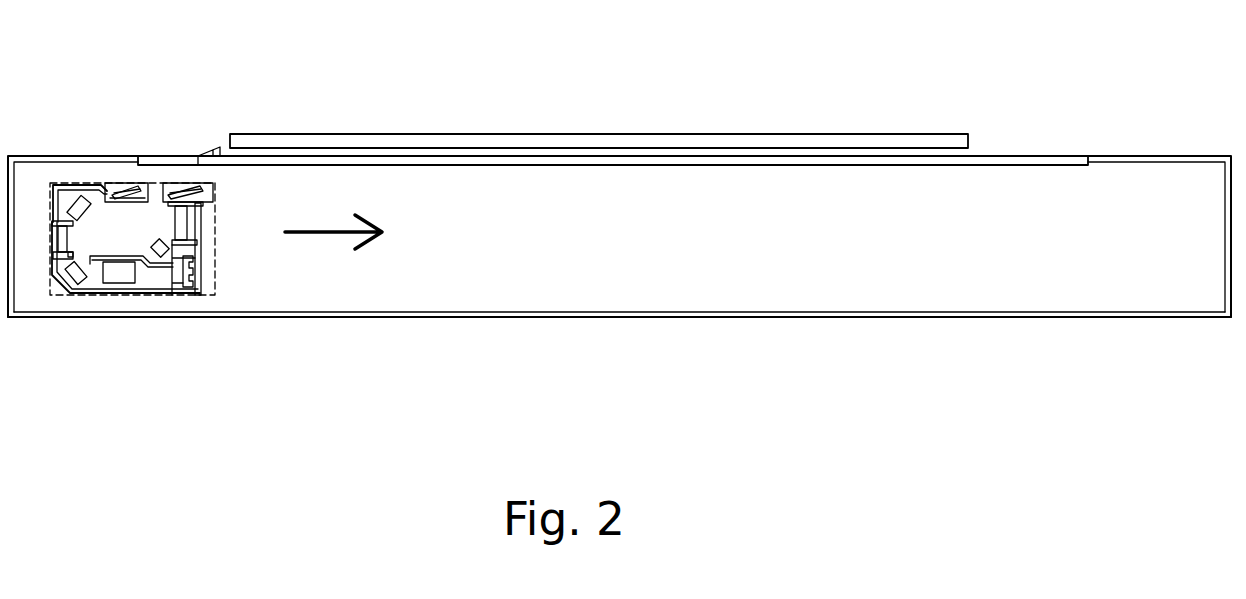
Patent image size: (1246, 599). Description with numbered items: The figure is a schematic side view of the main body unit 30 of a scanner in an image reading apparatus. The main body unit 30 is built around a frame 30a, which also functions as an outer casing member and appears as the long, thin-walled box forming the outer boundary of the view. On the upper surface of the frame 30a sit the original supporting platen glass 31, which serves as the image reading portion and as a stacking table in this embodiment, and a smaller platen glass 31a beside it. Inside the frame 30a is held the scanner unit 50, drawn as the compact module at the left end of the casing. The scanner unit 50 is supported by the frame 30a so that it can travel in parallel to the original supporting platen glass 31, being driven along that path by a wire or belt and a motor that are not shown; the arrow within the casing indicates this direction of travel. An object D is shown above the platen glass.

The main body unit 30 is at (619, 196).
The frame 30a is at (823, 317).
The original supporting platen glass 31 is at (630, 159).
The platen glass 31a is at (175, 155).
The scanner unit 50 is at (250, 268).
The tray D is at (597, 134).